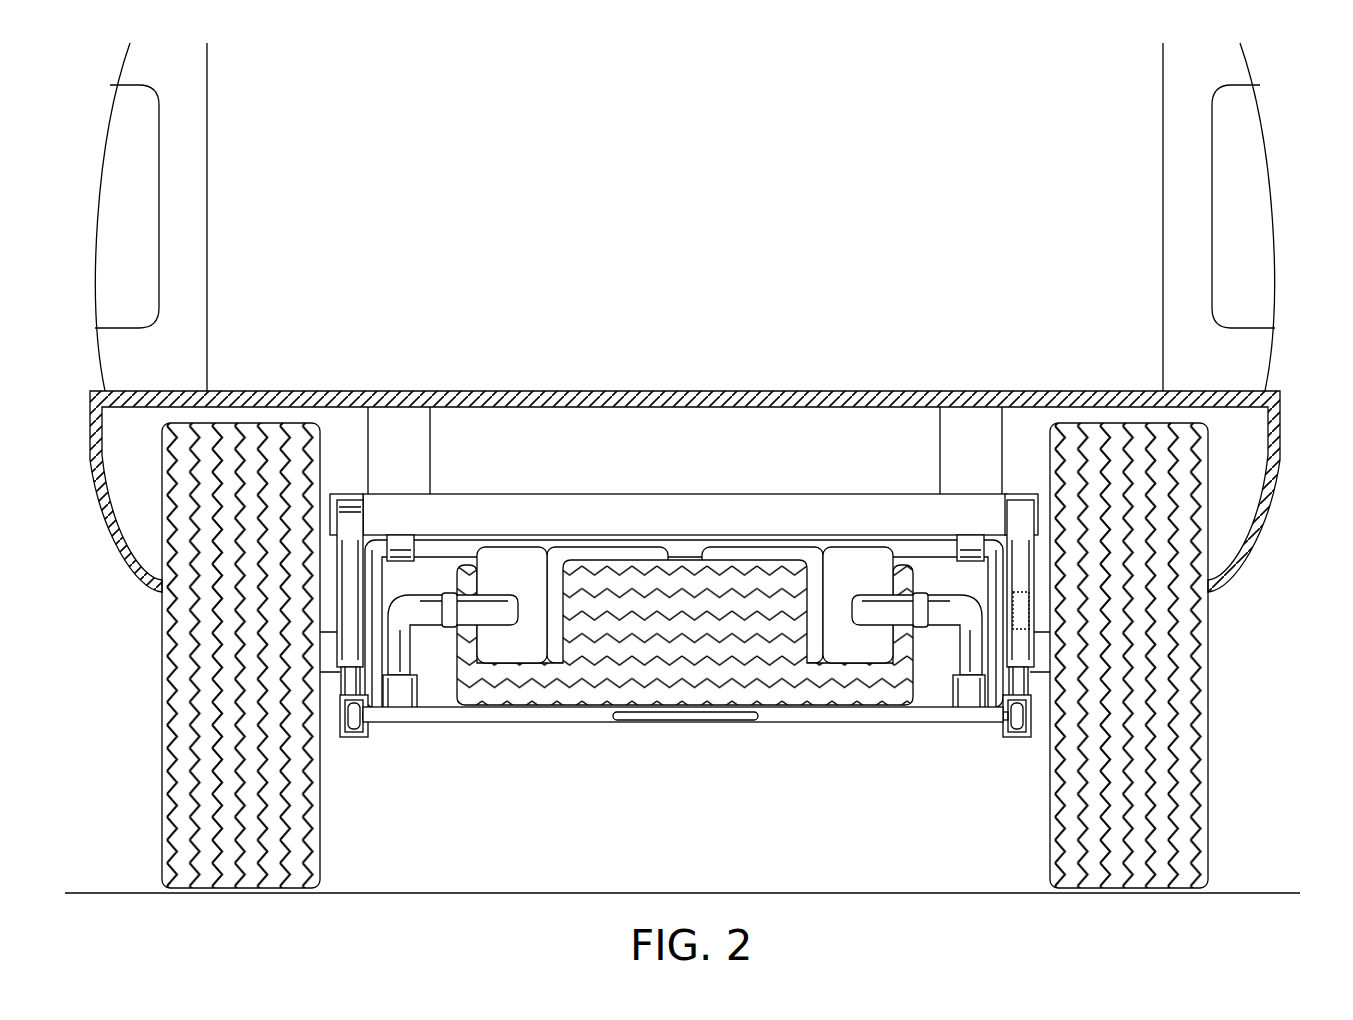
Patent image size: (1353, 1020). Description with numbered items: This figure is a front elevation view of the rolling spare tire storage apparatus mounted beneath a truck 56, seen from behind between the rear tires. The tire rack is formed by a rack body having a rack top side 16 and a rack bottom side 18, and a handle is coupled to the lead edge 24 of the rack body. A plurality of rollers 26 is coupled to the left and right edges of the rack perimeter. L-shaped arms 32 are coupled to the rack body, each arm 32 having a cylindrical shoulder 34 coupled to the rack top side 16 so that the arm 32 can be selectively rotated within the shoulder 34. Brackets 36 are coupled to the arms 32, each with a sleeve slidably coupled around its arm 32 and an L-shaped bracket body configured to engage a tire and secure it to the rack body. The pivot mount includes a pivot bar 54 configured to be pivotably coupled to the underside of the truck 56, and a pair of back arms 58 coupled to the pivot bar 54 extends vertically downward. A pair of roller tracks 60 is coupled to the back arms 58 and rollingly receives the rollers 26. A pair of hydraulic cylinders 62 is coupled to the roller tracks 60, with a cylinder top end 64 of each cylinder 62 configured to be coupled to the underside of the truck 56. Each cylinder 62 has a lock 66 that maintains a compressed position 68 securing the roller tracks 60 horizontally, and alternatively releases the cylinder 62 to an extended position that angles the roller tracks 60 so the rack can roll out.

The rack top side 16 is at (940, 692).
The rack bottom side 18 is at (868, 722).
The lead edge 24 is at (823, 720).
The rollers 26 is at (1013, 737).
The arm 32 is at (412, 612).
The cylindrical shoulder 34 is at (405, 692).
The bracket 36 is at (833, 610).
The pivot bar 54 is at (447, 547).
The truck 56 is at (1255, 347).
The back arms 58 is at (375, 593).
The roller tracks 60 is at (340, 737).
The hydraulic cylinder 62 is at (348, 578).
The cylinder top end 64 is at (351, 500).
The lock 66 is at (1022, 597).
The compressed position 68 is at (1023, 657).